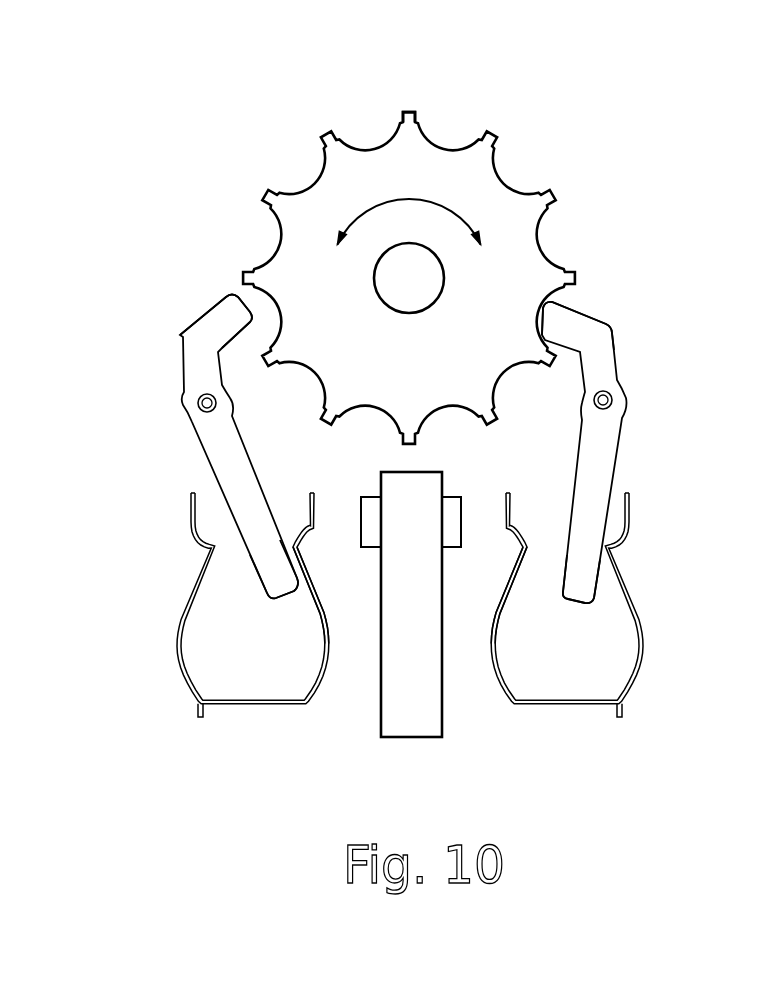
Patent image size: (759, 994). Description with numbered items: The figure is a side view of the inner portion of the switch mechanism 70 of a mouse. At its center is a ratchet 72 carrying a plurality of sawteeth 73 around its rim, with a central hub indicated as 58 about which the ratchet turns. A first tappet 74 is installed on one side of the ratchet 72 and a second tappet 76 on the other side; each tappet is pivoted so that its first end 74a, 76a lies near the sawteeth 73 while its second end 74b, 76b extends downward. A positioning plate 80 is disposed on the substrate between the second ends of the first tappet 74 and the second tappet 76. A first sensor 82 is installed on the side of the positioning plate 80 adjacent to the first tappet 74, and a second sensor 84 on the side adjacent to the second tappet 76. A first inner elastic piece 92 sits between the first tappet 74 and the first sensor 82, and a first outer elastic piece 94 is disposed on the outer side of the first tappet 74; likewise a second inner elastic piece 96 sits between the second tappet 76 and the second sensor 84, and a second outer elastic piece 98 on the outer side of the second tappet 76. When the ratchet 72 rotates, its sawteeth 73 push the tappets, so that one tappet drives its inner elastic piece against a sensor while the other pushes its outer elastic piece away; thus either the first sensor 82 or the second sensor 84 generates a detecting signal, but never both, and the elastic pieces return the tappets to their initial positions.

The switch mechanism 70 is at (208, 203).
The shaft 58 is at (403, 263).
The ratchet 72 is at (477, 188).
The sawteeth 73 is at (417, 116).
The first tappet 74 is at (205, 360).
The first end of the first tappet 74a is at (213, 322).
The second end of the first tappet 74b is at (263, 548).
The second tappet 76 is at (598, 363).
The first end of the second tappet 76a is at (572, 323).
The second end of the second tappet 76b is at (580, 560).
The positioning plate 80 is at (427, 712).
The first sensor 82 is at (372, 508).
The second sensor 84 is at (450, 508).
The first inner elastic piece 92 is at (330, 633).
The first outer elastic piece 94 is at (185, 615).
The second inner elastic piece 96 is at (493, 633).
The second outer elastic piece 98 is at (637, 613).